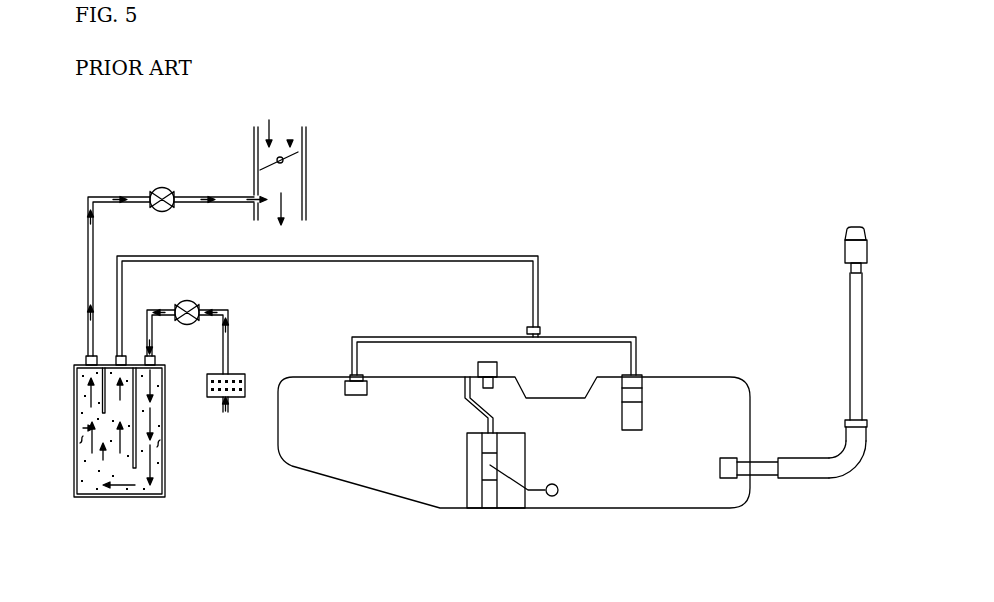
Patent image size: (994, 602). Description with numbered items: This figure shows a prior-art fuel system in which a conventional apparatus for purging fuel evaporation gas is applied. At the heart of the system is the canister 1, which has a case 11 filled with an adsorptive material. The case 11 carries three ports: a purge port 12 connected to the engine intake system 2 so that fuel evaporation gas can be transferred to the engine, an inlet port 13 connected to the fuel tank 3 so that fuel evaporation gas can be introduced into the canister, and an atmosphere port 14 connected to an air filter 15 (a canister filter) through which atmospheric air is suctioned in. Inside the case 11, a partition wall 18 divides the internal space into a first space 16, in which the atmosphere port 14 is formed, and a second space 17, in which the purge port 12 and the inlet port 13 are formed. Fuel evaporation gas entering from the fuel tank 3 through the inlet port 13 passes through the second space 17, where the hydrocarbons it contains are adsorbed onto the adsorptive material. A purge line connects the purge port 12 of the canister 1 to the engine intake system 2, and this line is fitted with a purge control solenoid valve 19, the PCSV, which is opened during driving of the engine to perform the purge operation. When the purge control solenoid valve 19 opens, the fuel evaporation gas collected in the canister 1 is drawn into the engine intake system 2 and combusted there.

The canister 1 is at (270, 397).
The engine intake system 2 is at (306, 182).
The fuel tank 3 is at (703, 376).
The case 11 is at (77, 393).
The purge port 12 is at (86, 357).
The inlet port 13 is at (126, 355).
The atmosphere port 14 is at (158, 358).
The air filter 15 is at (241, 374).
The first space 16 is at (161, 440).
The second space 17 is at (79, 443).
The partition wall 18 is at (135, 470).
The purge control solenoid valve 19 is at (163, 187).